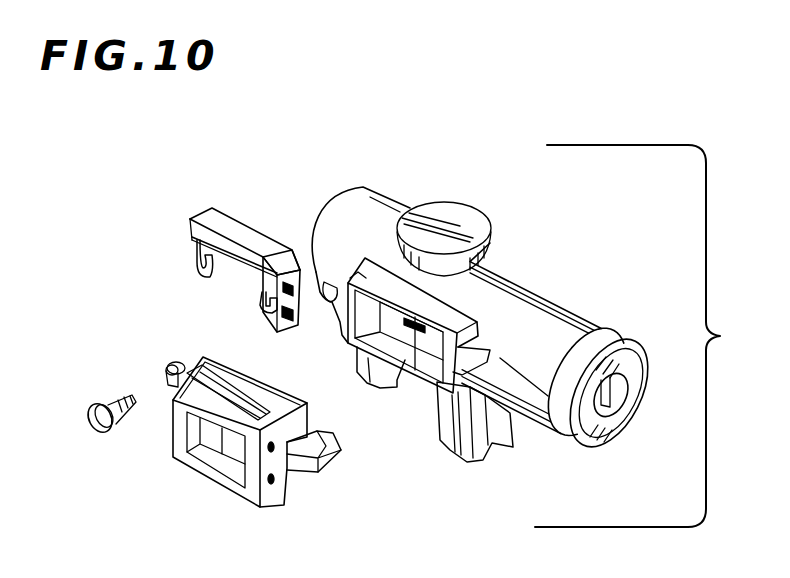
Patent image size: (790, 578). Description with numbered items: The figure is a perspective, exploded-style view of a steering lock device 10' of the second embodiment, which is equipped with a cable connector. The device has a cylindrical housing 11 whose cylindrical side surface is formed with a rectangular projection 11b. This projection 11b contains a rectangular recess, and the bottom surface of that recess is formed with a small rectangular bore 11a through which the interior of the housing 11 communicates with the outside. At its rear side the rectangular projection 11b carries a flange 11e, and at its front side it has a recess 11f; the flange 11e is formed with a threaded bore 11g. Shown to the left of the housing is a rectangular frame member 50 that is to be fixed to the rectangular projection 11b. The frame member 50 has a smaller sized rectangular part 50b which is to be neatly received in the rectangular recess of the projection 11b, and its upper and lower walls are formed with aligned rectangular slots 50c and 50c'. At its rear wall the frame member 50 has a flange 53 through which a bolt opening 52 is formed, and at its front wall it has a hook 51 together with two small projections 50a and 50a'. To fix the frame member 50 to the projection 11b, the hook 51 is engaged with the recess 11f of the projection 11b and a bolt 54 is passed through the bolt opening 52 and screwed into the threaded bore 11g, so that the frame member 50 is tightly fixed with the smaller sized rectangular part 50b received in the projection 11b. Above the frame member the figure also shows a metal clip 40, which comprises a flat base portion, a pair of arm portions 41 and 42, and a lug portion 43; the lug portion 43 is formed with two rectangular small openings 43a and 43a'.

The steering lock device 10' is at (592, 312).
The cylindrical housing 11 is at (542, 303).
The small rectangular bore 11a is at (417, 380).
The rectangular projection 11b is at (388, 277).
The flange 11e is at (354, 274).
The recess 11f is at (484, 462).
The threaded bore 11g is at (331, 285).
The metal clip 40 is at (194, 192).
The arm portion 41 is at (192, 258).
The arm portion 42 is at (260, 303).
The lug portion 43 is at (290, 330).
The rectangular small opening 43a is at (278, 217).
The rectangular small opening 43a' is at (233, 201).
The rectangular frame member 50 is at (212, 478).
The small projection 50a is at (318, 506).
The small projection 50a' is at (257, 518).
The smaller sized rectangular part 50b is at (258, 385).
The rectangular slot 50c is at (166, 423).
The rectangular slot 50c' is at (157, 453).
The hook 51 is at (334, 474).
The bolt opening 52 is at (176, 378).
The flange 53 is at (182, 366).
The bolt 54 is at (105, 402).